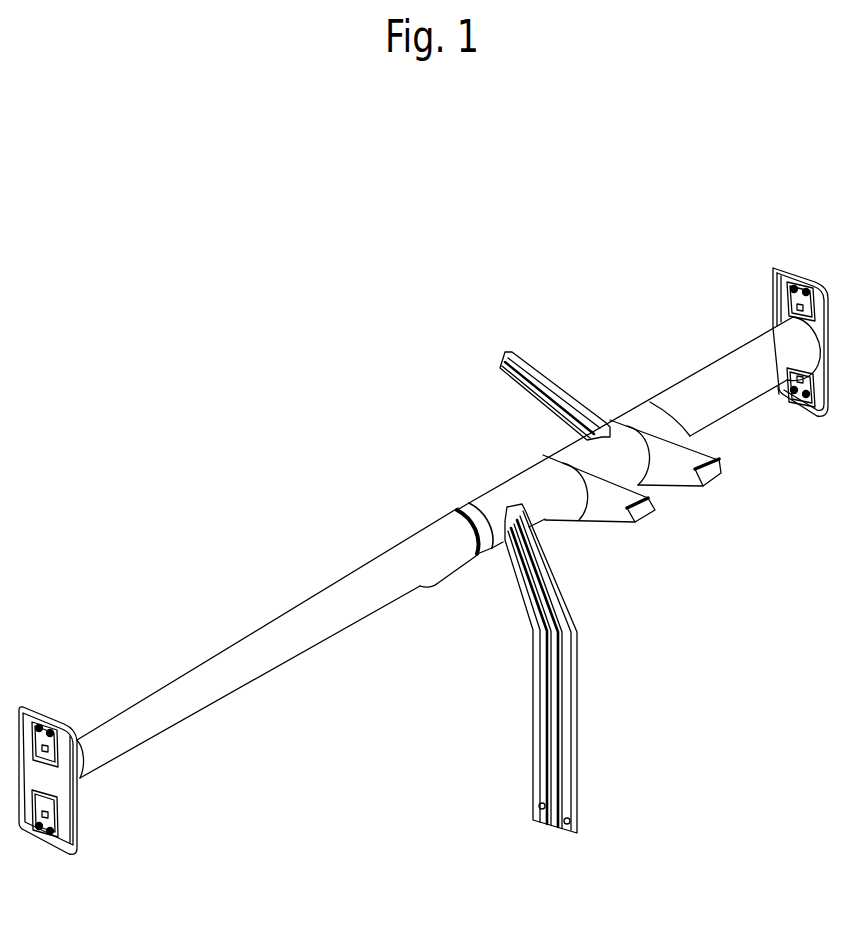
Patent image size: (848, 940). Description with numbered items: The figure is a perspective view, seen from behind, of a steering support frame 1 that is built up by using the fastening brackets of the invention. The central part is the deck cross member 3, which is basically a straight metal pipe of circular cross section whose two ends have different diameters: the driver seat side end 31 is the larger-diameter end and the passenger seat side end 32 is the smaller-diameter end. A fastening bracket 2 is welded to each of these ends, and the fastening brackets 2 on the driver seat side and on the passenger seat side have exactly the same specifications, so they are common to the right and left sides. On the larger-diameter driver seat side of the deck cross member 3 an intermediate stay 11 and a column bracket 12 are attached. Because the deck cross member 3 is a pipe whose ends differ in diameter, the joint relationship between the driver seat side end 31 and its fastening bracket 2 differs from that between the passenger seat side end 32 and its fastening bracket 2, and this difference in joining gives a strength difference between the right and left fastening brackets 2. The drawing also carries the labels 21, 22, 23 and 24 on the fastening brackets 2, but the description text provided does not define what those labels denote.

The steering support frame 1 is at (352, 545).
The fastening bracket 2 is at (43, 700).
The deck cross member 3 is at (280, 662).
The intermediate stay 11 is at (546, 660).
The column bracket 12 is at (597, 508).
The base plate 21 is at (72, 855).
The intermediate plate 22 is at (68, 792).
The fastening pad 23 is at (60, 714).
The edge rim 24 is at (58, 757).
The driver seat side end 31 is at (797, 347).
The passenger seat side end 32 is at (85, 756).